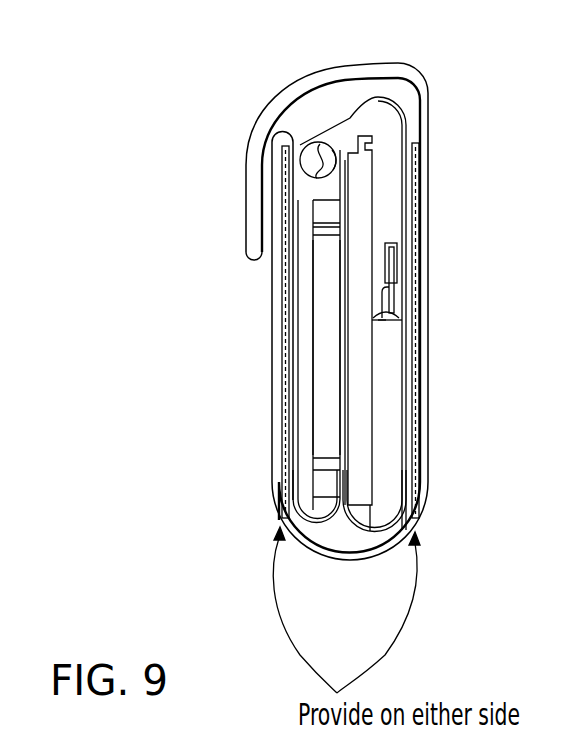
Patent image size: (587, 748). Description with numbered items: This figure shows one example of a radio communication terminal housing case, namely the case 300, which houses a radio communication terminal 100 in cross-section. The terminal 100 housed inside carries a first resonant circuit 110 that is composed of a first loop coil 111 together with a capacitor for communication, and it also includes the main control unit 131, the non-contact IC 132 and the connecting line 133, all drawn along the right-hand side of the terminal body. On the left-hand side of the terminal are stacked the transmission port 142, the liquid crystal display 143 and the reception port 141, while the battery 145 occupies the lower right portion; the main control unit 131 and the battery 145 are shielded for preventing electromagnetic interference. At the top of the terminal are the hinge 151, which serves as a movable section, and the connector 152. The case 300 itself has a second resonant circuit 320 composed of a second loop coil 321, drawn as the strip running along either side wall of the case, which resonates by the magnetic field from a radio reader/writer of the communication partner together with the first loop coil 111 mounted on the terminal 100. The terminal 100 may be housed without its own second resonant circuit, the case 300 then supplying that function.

The case 300 is at (430, 127).
The second resonant circuit 320 is at (343, 330).
The second loop coil 321 is at (287, 393).
The radio communication terminal 100 is at (345, 530).
The transmission port 142 is at (322, 213).
The liquid crystal display 143 is at (325, 347).
The reception port 141 is at (325, 484).
The main control unit 131 is at (358, 162).
The battery 145 is at (388, 495).
The non-contact IC 132 is at (397, 258).
The first resonant circuit 110 is at (460, 285).
The first loop coil 111 is at (395, 293).
The connecting line 133 is at (393, 318).
The connector 152 is at (312, 145).
The hinge 151 is at (315, 155).